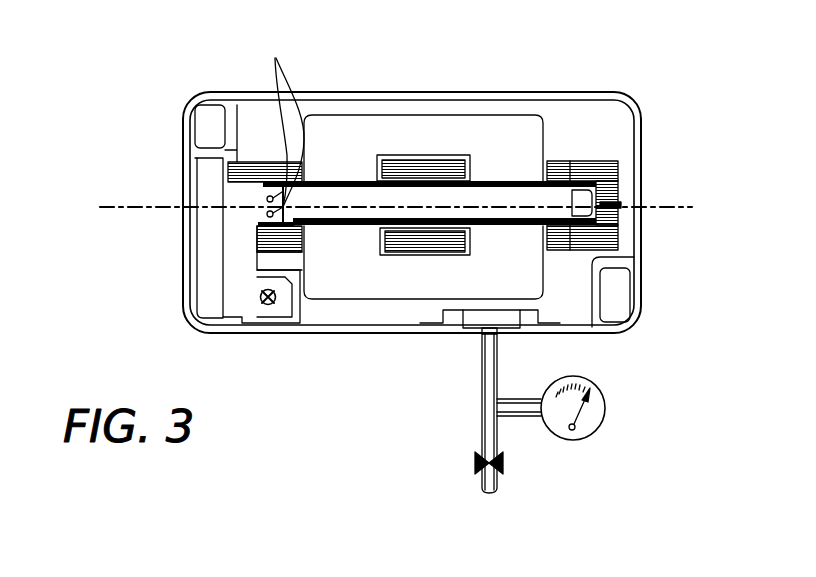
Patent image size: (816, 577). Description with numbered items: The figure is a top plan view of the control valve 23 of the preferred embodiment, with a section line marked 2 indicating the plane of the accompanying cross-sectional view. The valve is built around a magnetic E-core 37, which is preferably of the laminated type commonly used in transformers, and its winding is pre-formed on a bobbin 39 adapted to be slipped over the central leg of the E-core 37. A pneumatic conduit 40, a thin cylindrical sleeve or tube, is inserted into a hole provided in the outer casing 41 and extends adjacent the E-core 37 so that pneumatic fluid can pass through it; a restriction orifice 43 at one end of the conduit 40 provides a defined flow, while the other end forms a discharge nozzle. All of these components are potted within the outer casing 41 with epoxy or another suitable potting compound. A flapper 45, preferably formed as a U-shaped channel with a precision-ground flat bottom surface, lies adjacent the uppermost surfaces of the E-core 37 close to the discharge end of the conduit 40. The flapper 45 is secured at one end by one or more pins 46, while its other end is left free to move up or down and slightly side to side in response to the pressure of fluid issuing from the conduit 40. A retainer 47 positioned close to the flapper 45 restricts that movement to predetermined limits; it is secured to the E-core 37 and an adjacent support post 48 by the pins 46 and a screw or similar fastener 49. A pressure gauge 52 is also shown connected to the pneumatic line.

The section line 2- 2 is at (100, 207).
The control valve 23 is at (152, 243).
The magnetic E-core 37 is at (620, 228).
The bobbin 39 is at (463, 113).
The pneumatic conduit 40 is at (480, 427).
The outer casing 41 is at (458, 335).
The restriction orifice 43 is at (503, 460).
The flapper 45 is at (570, 180).
The pins 46 is at (283, 127).
The retainer 47 is at (356, 192).
The support post 48 is at (240, 320).
The screw or similar fastener 49 is at (275, 299).
The pressure gauge 52 is at (605, 408).